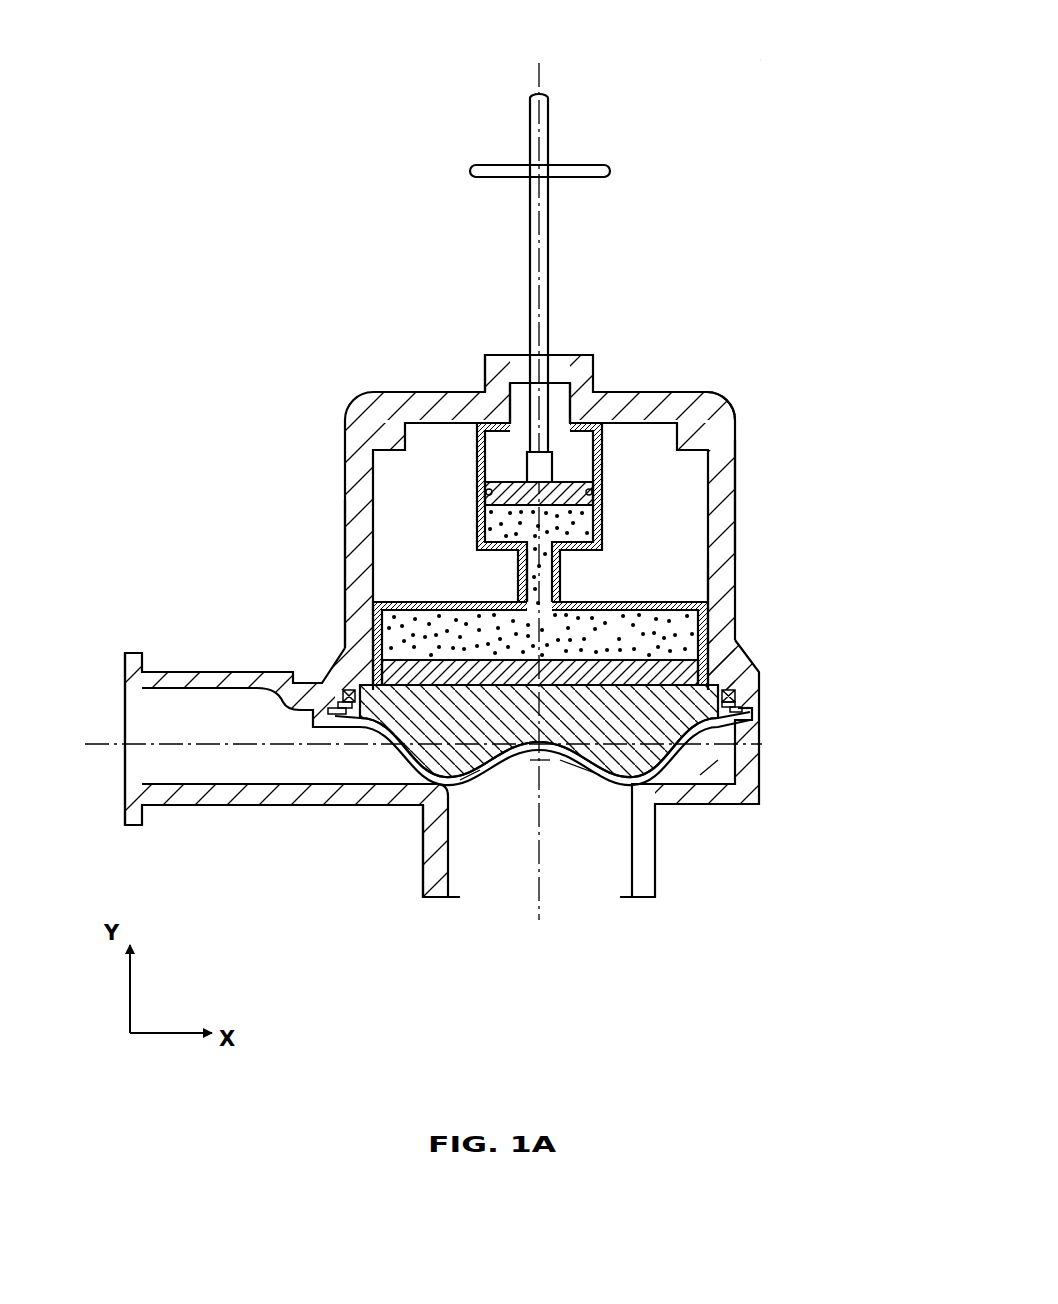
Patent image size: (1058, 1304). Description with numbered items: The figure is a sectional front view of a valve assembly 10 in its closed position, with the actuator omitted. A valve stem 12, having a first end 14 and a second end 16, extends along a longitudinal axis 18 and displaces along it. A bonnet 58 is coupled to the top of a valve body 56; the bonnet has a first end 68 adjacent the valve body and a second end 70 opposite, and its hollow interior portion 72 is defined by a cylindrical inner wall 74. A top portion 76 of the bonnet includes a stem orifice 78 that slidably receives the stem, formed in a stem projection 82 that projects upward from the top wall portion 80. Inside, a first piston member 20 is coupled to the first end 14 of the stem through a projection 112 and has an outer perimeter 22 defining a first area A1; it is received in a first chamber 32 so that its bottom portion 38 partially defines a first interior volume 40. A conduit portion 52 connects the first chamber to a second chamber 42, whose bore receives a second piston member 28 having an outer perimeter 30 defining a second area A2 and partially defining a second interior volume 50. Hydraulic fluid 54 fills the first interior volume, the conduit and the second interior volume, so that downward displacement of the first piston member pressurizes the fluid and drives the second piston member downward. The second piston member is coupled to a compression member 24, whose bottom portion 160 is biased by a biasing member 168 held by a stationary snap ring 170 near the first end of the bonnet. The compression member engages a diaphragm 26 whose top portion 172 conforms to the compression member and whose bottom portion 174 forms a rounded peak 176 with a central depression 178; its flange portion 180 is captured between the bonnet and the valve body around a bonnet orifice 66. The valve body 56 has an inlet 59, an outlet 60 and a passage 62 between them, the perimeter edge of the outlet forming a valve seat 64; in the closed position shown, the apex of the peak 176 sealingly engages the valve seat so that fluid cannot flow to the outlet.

The valve assembly 10 is at (780, 57).
The valve stem 12 is at (551, 235).
The first end 14 is at (520, 443).
The second end 16 is at (530, 108).
The longitudinal axis 18 is at (541, 66).
The first piston member 20 is at (592, 478).
The outer perimeter 22 is at (485, 496).
The compression member 24 is at (702, 702).
The diaphragm 26 is at (737, 730).
The second piston member 28 is at (720, 665).
The outer perimeter 30 is at (377, 650).
The first chamber 32 is at (605, 447).
The bottom portion 38 is at (495, 509).
The first interior volume 40 is at (575, 520).
The second chamber 42 is at (685, 603).
The second interior volume 50 is at (417, 637).
The conduit portion 52 is at (510, 568).
The hydraulic fluid 54 is at (680, 600).
The valve body 56 is at (658, 888).
The bonnet 58 is at (663, 392).
The inlet 59 is at (612, 897).
The outlet 60 is at (163, 757).
The passage 62 is at (345, 765).
The valve seat 64 is at (425, 860).
The bonnet orifice 66 is at (322, 752).
The first end 68 is at (760, 682).
The second end 70 is at (717, 403).
The hollow interior portion 72 is at (672, 560).
The cylindrical inner wall 74 is at (712, 470).
The top portion 76 is at (347, 369).
The stem orifice 78 is at (555, 355).
The top wall portion 80 is at (625, 395).
The stem projection 82 is at (483, 374).
The projection 112 is at (527, 463).
The bottom portion 160 is at (472, 790).
The biasing member 168 is at (736, 690).
The snap ring 170 is at (743, 712).
The top portion 172 is at (727, 760).
The bottom portion 174 is at (688, 783).
The rounded peak 176 is at (575, 775).
The central depression 178 is at (545, 770).
The flange portion 180 is at (758, 740).
The first area A1 is at (487, 537).
The second area A2 is at (607, 635).